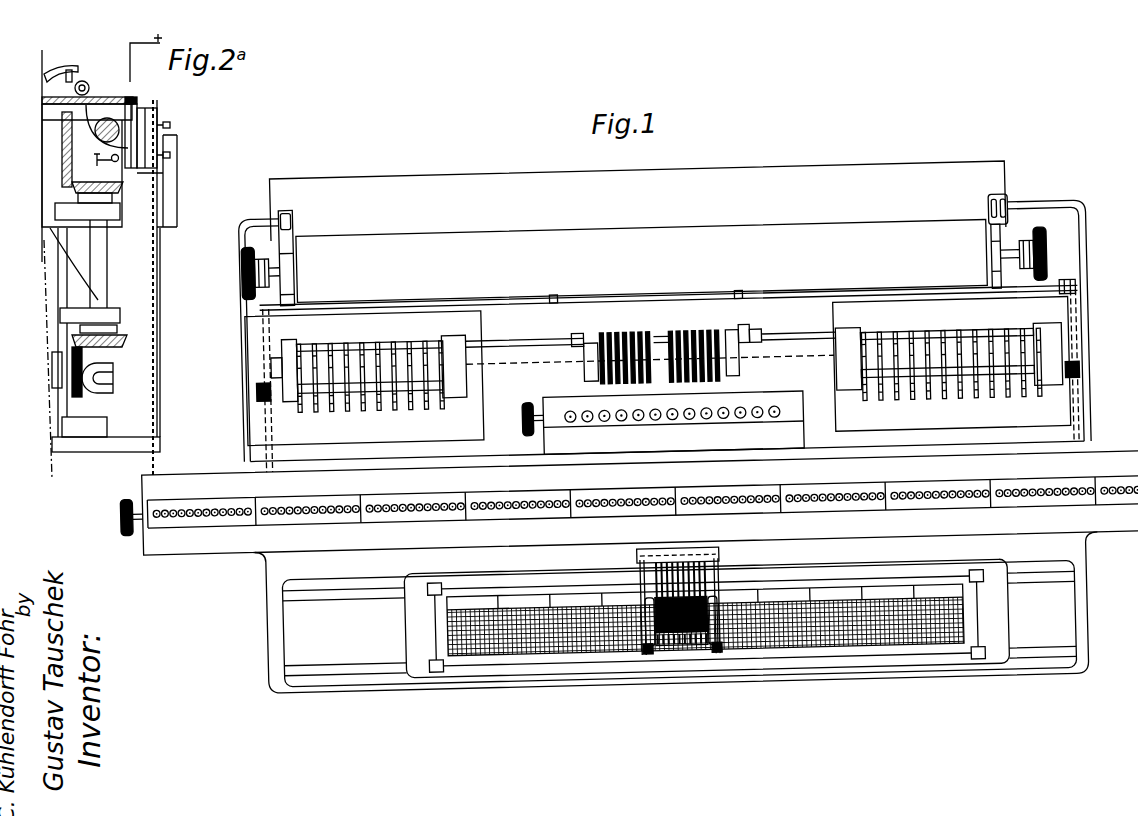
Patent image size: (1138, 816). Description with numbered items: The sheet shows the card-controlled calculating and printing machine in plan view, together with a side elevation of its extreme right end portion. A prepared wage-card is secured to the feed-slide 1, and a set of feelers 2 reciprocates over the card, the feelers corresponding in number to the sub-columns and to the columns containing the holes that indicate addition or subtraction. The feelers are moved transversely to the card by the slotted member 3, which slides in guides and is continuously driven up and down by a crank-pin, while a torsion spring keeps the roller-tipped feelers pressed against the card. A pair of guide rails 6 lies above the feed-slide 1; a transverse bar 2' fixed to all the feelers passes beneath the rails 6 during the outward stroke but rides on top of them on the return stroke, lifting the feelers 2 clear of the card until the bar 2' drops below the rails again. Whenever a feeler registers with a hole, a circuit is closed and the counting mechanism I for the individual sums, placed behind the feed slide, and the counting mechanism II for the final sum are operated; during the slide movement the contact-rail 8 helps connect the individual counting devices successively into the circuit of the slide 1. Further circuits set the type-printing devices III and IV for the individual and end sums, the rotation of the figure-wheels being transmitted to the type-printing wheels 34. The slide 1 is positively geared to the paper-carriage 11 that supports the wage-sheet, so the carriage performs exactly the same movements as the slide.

In FIG. 1, the feed-slide 1 is at (905, 663).
In FIG. 2A, the feed-slide 1 is at (134, 99).
In FIG. 1, the feelers 2 is at (682, 634).
In FIG. 2A, the feelers 2 is at (81, 70).
In FIG. 2A, the transverse bar 2' is at (95, 82).
In FIG. 1, the slotted member 3 is at (715, 557).
In FIG. 1, the guide rails 6 is at (641, 608).
In FIG. 2A, the guide rails 6 is at (55, 70).
In FIG. 2A, the contact-rail 8 is at (163, 119).
In FIG. 1, the paper-carriage 11 is at (1000, 187).
In FIG. 1, the type-printing wheels 34 is at (668, 334).
In FIG. 1, the counting mechanism for individual sums I is at (629, 503).
In FIG. 1, the counting mechanism for the final sum II is at (663, 423).
In FIG. 1, the type-printing device III is at (364, 378).
In FIG. 1, the type-printing device IV is at (952, 364).